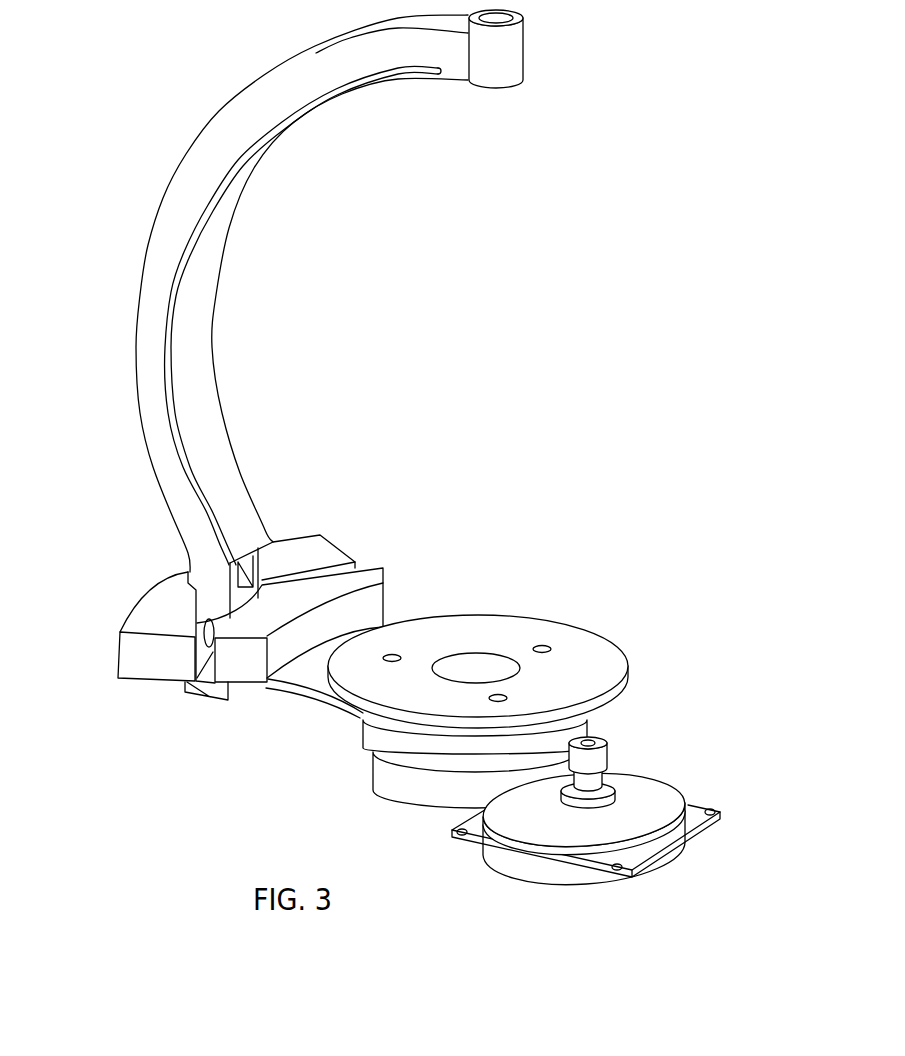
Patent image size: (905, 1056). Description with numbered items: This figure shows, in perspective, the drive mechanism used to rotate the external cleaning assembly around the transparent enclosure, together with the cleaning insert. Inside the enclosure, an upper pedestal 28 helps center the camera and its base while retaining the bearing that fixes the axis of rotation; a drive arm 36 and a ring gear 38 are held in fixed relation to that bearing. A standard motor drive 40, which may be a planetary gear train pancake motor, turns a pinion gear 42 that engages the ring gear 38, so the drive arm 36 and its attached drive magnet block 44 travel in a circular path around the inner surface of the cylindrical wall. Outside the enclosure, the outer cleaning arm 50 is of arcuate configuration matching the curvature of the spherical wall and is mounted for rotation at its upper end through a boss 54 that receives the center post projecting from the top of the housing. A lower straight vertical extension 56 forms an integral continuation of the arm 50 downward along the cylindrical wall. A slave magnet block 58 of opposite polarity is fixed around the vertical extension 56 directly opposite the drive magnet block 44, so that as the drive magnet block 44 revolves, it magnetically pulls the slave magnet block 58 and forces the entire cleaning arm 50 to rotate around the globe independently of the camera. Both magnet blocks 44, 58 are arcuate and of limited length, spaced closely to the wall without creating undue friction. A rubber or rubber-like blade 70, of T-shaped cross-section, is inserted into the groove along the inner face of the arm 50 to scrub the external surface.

The upper pedestal 28 is at (590, 657).
The drive arm 36 is at (300, 697).
The ring gear 38 is at (382, 750).
The motor drive 40 is at (650, 798).
The pinion gear 42 is at (607, 753).
The drive magnet block 44 is at (352, 577).
The outer cleaning arm 50 is at (140, 191).
The boss 54 is at (520, 48).
The lower straight vertical extension 56 is at (210, 689).
The slave magnet block 58 is at (148, 612).
The rubber blade 70 is at (190, 355).